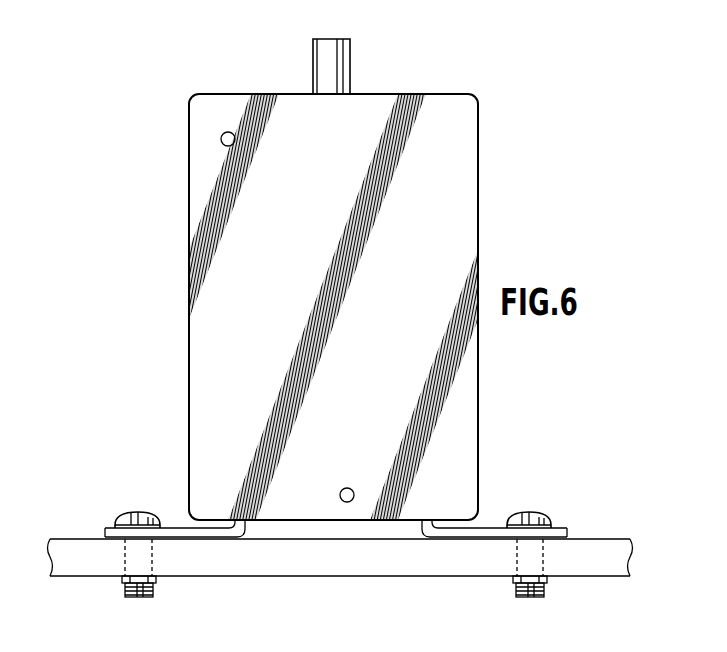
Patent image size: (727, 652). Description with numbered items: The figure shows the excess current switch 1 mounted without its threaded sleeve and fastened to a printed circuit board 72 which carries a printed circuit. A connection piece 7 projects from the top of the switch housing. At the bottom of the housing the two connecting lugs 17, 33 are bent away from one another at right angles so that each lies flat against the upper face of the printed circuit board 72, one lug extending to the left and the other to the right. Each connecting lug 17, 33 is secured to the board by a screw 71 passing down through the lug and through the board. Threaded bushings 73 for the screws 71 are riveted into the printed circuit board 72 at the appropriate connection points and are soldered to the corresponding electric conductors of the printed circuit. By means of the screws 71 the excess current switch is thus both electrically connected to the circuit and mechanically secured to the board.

The housing 1 is at (486, 172).
The pipe connection 7 is at (332, 54).
The connecting lug 17 is at (178, 532).
The connecting lug 33 is at (495, 530).
The screw 71 is at (119, 521).
The printed circuit board 72 is at (615, 553).
The threaded bushing 73 is at (125, 588).